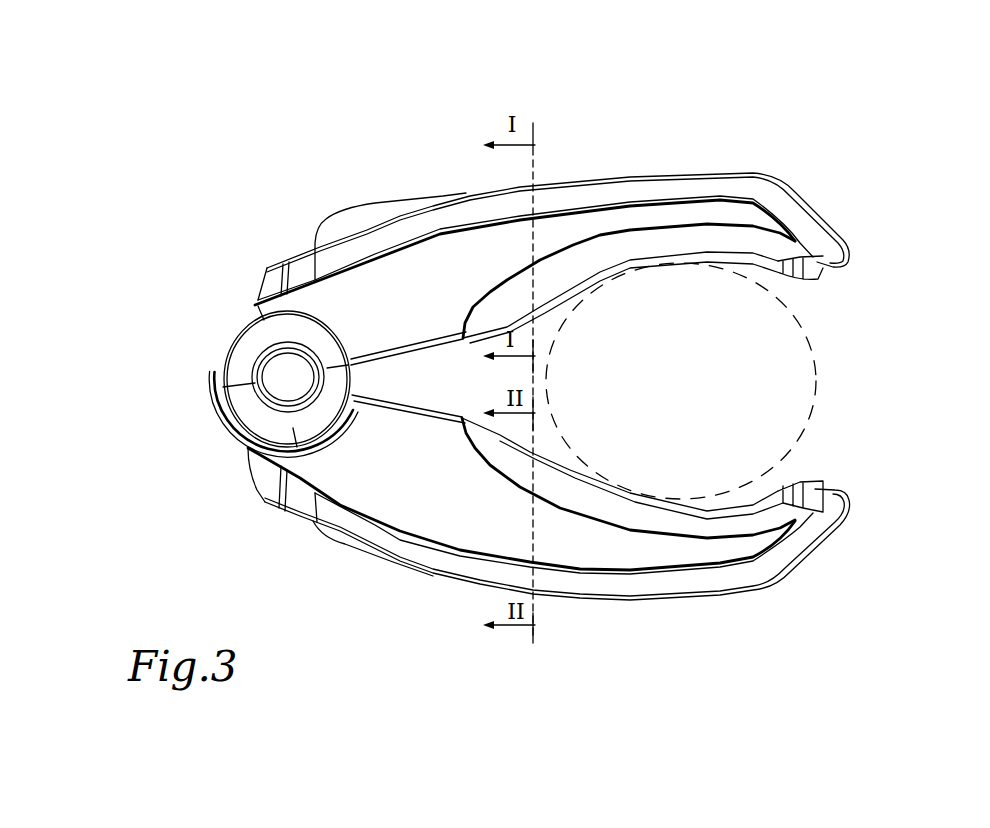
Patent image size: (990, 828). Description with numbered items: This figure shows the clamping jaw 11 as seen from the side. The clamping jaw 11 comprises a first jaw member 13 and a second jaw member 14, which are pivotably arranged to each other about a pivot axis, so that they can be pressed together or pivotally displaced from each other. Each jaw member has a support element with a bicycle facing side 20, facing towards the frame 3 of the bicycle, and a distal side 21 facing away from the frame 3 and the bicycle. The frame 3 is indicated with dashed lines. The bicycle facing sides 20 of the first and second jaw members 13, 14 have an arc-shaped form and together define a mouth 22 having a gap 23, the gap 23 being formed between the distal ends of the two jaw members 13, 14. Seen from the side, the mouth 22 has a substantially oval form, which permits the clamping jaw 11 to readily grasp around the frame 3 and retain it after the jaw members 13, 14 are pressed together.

The frame 3 is at (706, 381).
The clamping jaw 11 is at (834, 110).
The first jaw member 13 is at (462, 188).
The second jaw member 14 is at (428, 588).
The bicycle facing side 20 is at (633, 260).
The distal side 21 is at (628, 177).
The mouth 22 is at (703, 391).
The gap 23 is at (836, 351).